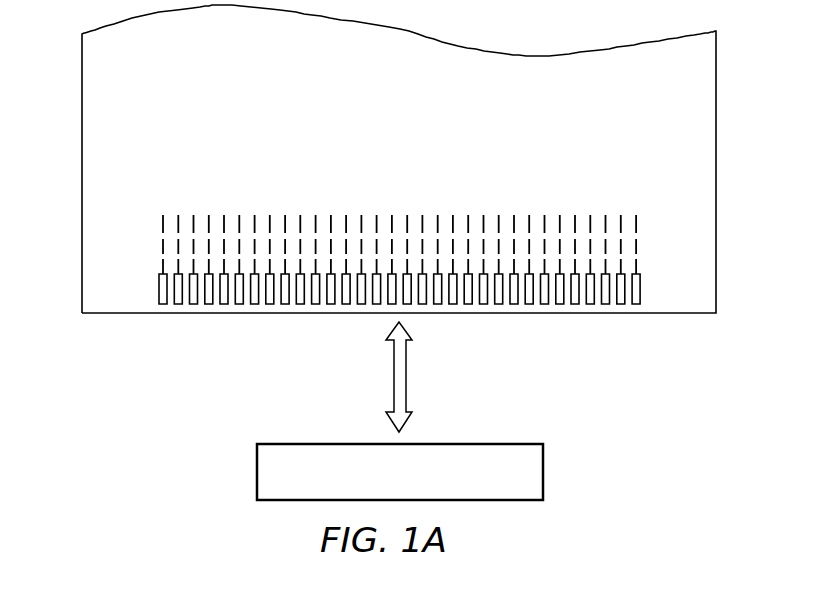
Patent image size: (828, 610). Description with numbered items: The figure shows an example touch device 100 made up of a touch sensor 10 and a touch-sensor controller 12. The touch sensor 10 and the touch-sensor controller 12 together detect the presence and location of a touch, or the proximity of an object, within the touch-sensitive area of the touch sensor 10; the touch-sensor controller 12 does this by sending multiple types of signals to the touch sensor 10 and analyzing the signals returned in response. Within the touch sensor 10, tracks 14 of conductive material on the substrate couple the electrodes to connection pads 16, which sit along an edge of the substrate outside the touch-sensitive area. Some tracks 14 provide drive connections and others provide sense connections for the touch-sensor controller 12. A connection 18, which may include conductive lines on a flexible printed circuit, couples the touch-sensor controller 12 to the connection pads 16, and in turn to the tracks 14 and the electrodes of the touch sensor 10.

The touch device 100 is at (126, 370).
The touch sensor 10 is at (410, 169).
The tracks 14 is at (163, 248).
The connection pads 16 is at (158, 288).
The connection 18 is at (393, 376).
The touch-sensor controller 12 is at (545, 467).